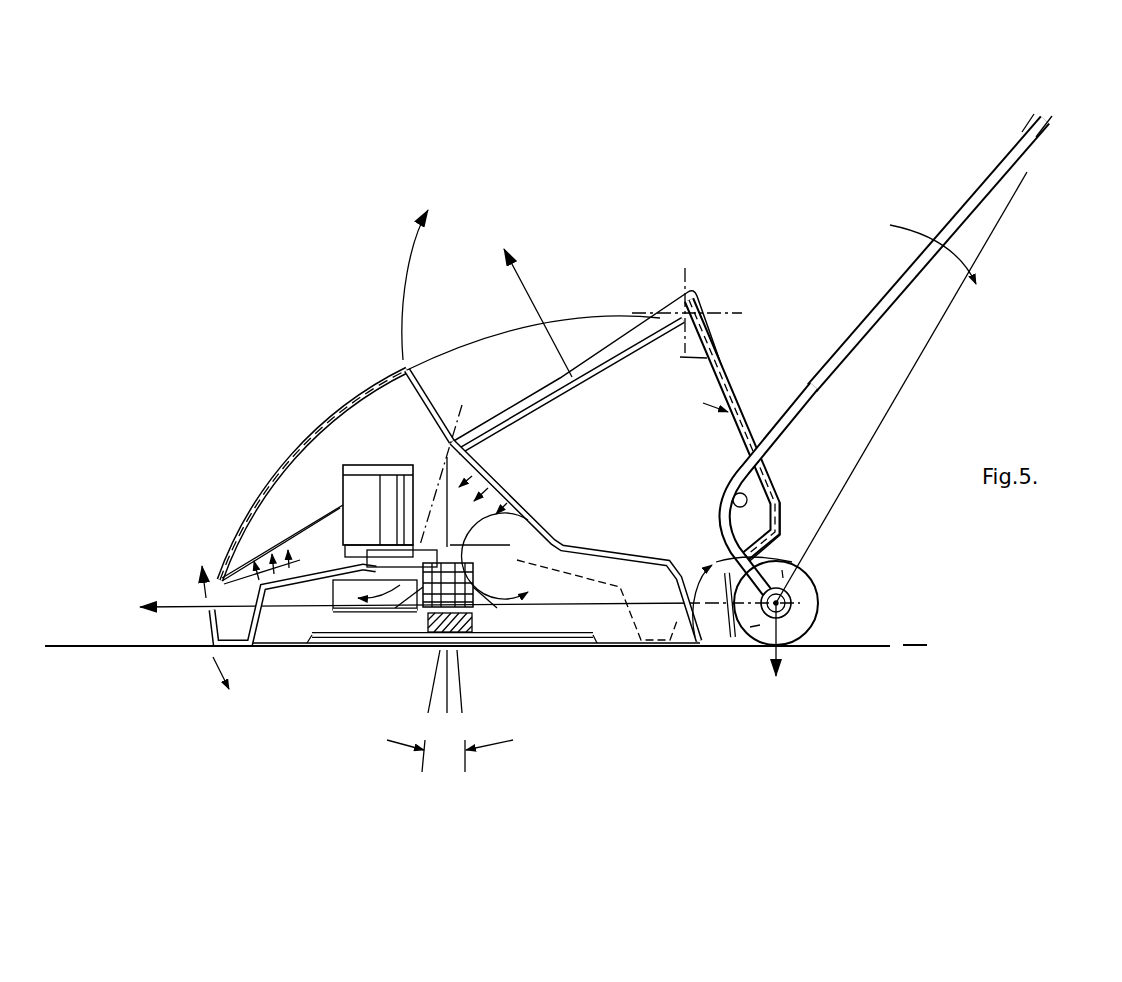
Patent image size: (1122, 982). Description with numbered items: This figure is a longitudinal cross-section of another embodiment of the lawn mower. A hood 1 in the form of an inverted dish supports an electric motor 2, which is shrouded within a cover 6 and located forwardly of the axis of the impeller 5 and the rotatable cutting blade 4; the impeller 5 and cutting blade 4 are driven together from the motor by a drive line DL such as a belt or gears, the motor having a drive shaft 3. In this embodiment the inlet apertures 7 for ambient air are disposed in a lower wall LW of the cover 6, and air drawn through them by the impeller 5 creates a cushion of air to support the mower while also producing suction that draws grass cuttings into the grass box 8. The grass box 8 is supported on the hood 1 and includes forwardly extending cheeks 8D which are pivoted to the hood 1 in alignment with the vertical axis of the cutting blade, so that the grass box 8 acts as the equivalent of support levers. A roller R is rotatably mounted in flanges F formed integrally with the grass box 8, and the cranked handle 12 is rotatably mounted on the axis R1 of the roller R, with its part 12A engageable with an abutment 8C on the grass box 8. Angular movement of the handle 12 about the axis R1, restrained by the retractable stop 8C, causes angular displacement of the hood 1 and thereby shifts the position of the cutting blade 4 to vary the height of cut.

The hood 1 is at (258, 591).
The electric motor 2 is at (353, 485).
The drive shaft 3 is at (467, 632).
The rotatable cutting blade 4 is at (563, 643).
The impeller 5 is at (560, 592).
The cover 6 is at (268, 497).
The inlet apertures 7 is at (248, 583).
The grass box 8 is at (735, 390).
The abutment 8C is at (762, 490).
The forwardly extending cheeks 8D is at (390, 390).
The handle 12 is at (975, 206).
The lower end of handle 12A is at (750, 522).
The lower wall LW is at (291, 538).
The drive line DL is at (412, 632).
The flanges F is at (792, 561).
The roller R is at (793, 628).
The axis of the roller R1 is at (800, 600).